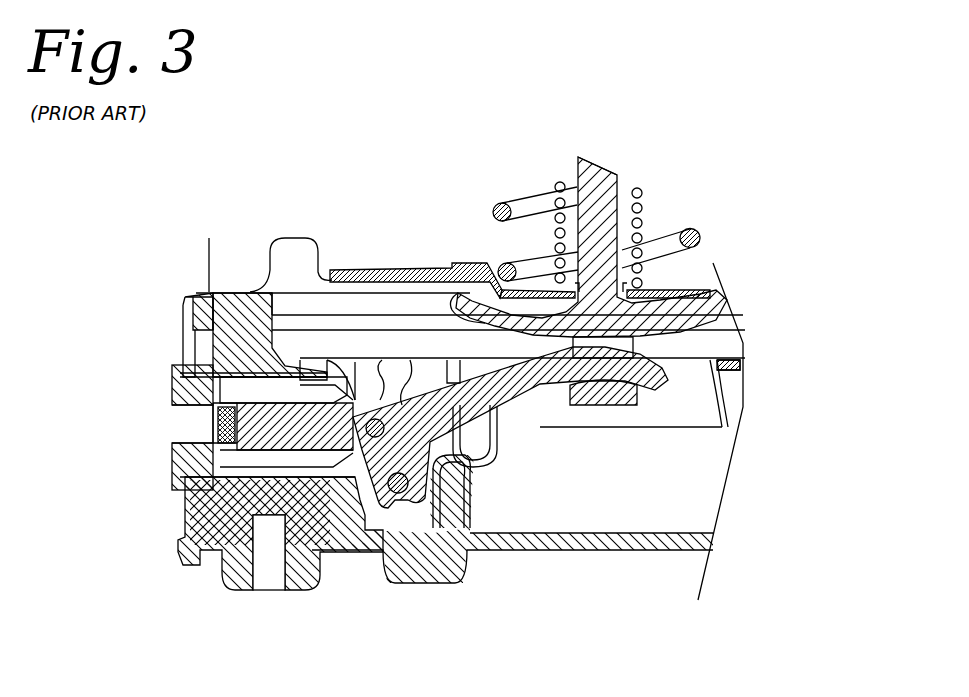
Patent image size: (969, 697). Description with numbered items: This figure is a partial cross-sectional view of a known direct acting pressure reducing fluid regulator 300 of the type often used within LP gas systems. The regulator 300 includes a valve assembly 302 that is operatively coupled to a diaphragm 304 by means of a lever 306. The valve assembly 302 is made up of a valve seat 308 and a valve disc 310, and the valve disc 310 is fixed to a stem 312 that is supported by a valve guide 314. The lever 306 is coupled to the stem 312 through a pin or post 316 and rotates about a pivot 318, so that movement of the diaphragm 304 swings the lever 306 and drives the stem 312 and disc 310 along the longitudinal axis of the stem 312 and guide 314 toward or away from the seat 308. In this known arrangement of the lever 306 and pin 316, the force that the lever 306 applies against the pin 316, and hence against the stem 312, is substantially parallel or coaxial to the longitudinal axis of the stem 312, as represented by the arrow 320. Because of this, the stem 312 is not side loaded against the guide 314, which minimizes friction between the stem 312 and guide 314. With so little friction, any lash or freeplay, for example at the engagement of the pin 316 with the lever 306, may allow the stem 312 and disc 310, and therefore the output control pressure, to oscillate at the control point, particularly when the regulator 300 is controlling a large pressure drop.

The fluid regulator 300 is at (713, 172).
The valve assembly 302 is at (238, 480).
The diaphragm 304 is at (333, 272).
The lever 306 is at (387, 428).
The valve seat 308 is at (187, 465).
The valve disc 310 is at (213, 420).
The stem 312 is at (187, 357).
The valve guide 314 is at (252, 532).
The pin 316 is at (376, 438).
The pivot 318 is at (403, 492).
The arrow 320 is at (432, 490).